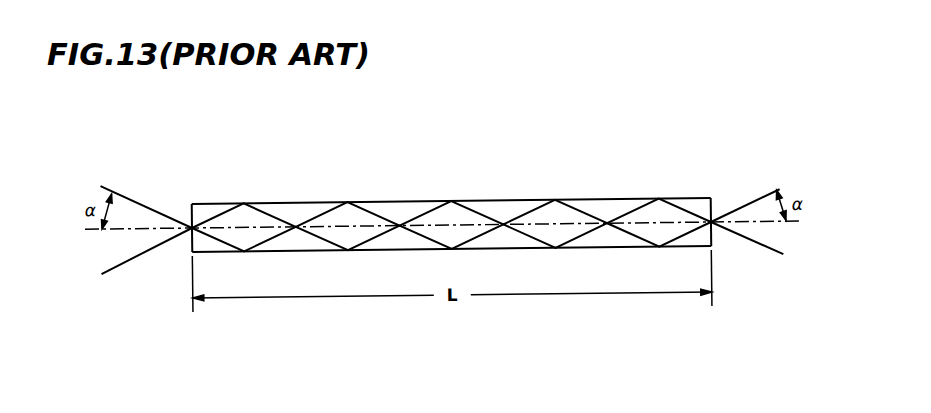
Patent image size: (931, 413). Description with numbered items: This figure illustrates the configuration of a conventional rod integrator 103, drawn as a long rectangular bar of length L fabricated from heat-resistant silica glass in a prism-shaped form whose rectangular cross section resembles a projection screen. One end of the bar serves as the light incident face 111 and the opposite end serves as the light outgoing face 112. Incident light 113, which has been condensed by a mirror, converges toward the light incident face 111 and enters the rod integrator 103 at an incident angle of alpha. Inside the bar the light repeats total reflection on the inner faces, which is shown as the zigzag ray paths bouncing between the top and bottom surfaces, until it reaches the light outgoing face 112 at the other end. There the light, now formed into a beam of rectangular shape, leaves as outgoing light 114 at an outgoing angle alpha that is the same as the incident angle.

The rod integrator 103 is at (418, 204).
The light incident face 111 is at (190, 243).
The light outgoing face 112 is at (715, 246).
The incident light 113 is at (143, 200).
The outgoing light 114 is at (762, 204).